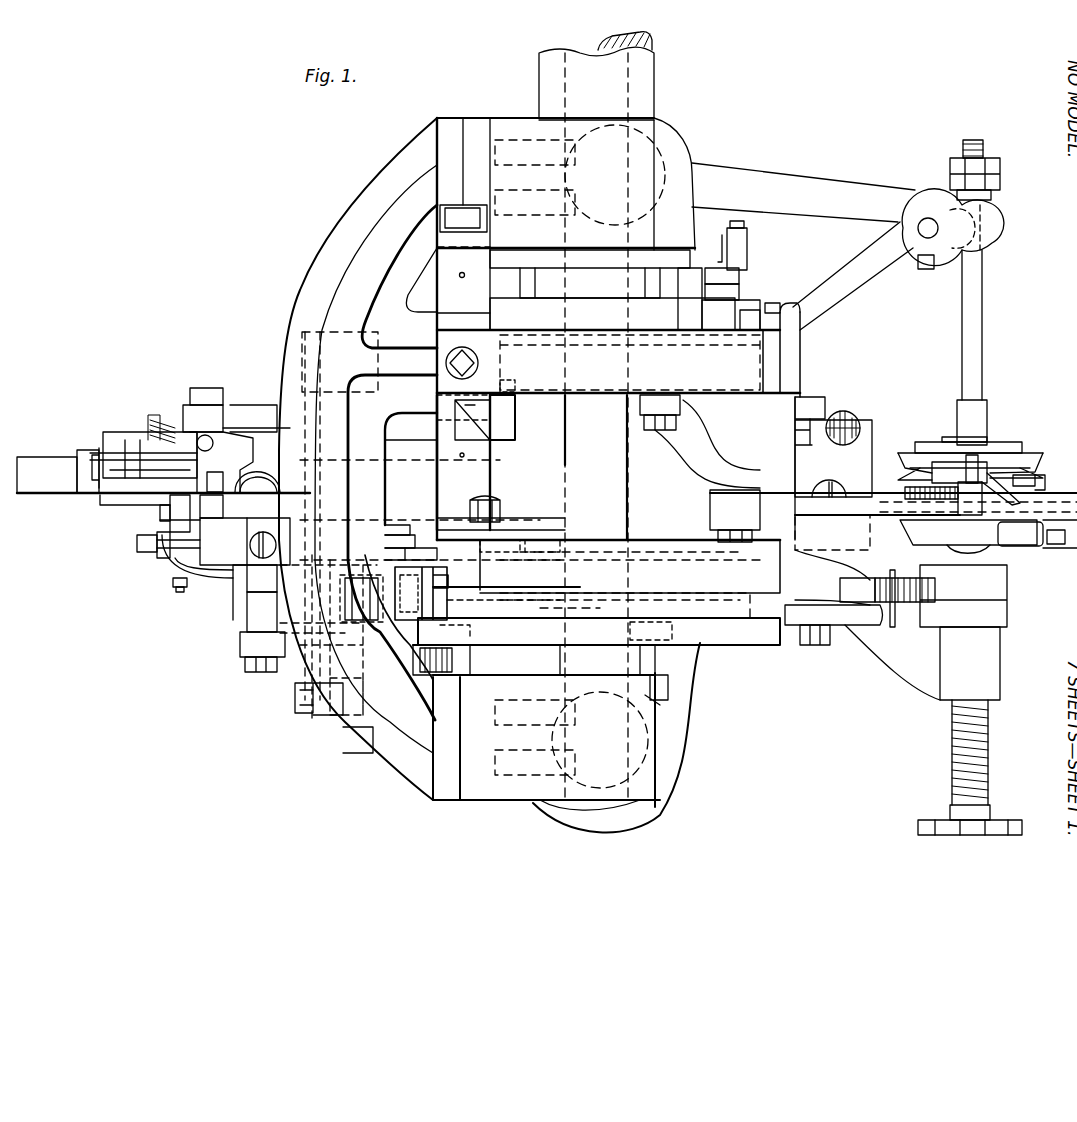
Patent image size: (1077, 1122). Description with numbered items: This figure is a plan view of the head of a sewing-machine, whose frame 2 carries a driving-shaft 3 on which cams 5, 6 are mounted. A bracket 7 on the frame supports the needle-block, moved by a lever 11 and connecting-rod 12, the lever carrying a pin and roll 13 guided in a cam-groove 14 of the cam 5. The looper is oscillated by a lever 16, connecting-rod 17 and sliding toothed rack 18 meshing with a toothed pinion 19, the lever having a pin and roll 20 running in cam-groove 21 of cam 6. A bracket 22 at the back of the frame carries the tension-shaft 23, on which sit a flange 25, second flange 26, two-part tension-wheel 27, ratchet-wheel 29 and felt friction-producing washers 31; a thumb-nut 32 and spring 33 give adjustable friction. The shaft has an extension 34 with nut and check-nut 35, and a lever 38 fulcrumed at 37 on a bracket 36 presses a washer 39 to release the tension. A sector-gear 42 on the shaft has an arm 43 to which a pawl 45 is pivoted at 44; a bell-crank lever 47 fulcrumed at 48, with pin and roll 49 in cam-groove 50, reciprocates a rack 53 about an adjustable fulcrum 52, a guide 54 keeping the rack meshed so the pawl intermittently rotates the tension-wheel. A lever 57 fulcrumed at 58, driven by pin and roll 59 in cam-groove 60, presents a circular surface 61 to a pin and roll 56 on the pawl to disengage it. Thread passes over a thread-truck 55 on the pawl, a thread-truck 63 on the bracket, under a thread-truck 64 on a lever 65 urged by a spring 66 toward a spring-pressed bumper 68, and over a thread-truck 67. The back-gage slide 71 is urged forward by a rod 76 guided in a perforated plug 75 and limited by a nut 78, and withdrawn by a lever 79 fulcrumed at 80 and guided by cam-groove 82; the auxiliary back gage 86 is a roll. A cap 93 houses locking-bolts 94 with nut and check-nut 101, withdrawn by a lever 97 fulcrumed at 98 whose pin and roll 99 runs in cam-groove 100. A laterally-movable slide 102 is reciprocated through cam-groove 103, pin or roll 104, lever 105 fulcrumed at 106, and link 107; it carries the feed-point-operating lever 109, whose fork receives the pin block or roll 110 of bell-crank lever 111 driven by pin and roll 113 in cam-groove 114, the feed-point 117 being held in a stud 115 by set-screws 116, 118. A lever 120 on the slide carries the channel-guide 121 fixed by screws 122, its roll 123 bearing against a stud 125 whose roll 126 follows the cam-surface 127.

The frame 2 is at (489, 442).
The driving-shaft 3 is at (610, 42).
The cam 5 is at (779, 350).
The cam 6 is at (596, 592).
The bracket 7 is at (163, 475).
The lever 11 is at (476, 462).
The connecting-rod 12 is at (256, 418).
The pin and roll 13 is at (472, 383).
The cam-groove 14 is at (529, 381).
The lever 16 is at (540, 527).
The connecting-rod 17 is at (400, 510).
The sliding toothed rack 18 is at (213, 495).
The toothed pinion 19 is at (93, 455).
The pin and roll 20 is at (500, 546).
The cam-groove 21 is at (542, 549).
The bracket 22 is at (952, 663).
The tension-shaft 23 is at (960, 752).
The flange 25 is at (1000, 441).
The second flange 26 is at (920, 526).
The tension-wheel 27 is at (900, 462).
The ratchet-wheel 29 is at (917, 487).
The friction-producing washers 31 is at (896, 532).
The thumb-nut 32 is at (930, 825).
The spring 33 is at (952, 720).
The extension 34 is at (982, 333).
The nut and check-nut 35 is at (1000, 176).
The bracket 36 is at (853, 276).
The fulcrum 37 is at (929, 240).
The lever 38 is at (997, 230).
The washer 39 is at (991, 194).
The sector-gear 42 is at (942, 590).
The arm 43 is at (1037, 534).
The pawl fulcrum 44 is at (1038, 486).
The pawl 45 is at (993, 490).
The bell-crank lever 47 is at (855, 628).
The fulcrum 48 is at (660, 702).
The pin and roll 49 is at (651, 633).
The cam-groove 50 is at (497, 636).
The fulcrum 52 is at (815, 645).
The rack 53 is at (892, 590).
The guide 54 is at (900, 615).
The thread-truck 55 is at (942, 470).
The pin and roll 56 is at (970, 498).
The lever 57 is at (707, 444).
The fulcrum 58 is at (716, 530).
The pin and roll 59 is at (660, 402).
The cam-groove 60 is at (653, 394).
The circular surface 61 is at (893, 505).
The thread-truck 63 is at (170, 506).
The thread-truck 64 is at (125, 440).
The lever 65 is at (132, 442).
The spring 66 is at (154, 415).
The thread-truck 67 is at (78, 452).
The spring-pressed bumper 68 is at (200, 437).
The back-gage slide 71 is at (810, 407).
The perforated plug 75 is at (797, 433).
The rod 76 is at (848, 428).
The nut 78 is at (830, 424).
The lever 79 is at (462, 289).
The fulcrum 80 is at (463, 226).
The cam-groove 82 is at (618, 361).
The auxiliary back gage 86 is at (278, 478).
The cap 93 is at (731, 315).
The locking-bolts 94 is at (748, 222).
The lever 97 is at (725, 280).
The fulcrum 98 is at (740, 288).
The pin and roll 99 is at (672, 285).
The cam-groove 100 is at (590, 274).
The nut and check-nut 101 is at (722, 245).
The slide 102 is at (308, 683).
The cam-groove 103 is at (700, 594).
The pin or roll 104 is at (438, 570).
The lever 105 is at (395, 553).
The fulcrum 106 is at (448, 596).
The connecting rod or link 107 is at (374, 623).
The feed-point-operating lever 109 is at (210, 575).
The pin block or roll 110 is at (262, 612).
The bell-crank lever 111 is at (400, 653).
The pin and roll 113 is at (472, 660).
The cam-groove 114 is at (503, 622).
The stud 115 is at (160, 560).
The set-screw 116 is at (180, 588).
The feed-point 117 is at (160, 510).
The set-screw 118 is at (137, 545).
The lever 120 is at (245, 541).
The channel-guide 121 is at (180, 520).
The screws 122 is at (172, 495).
The roll 123 is at (255, 592).
The stud 125 is at (395, 530).
The roll 126 is at (405, 540).
The cam-surface 127 is at (425, 549).